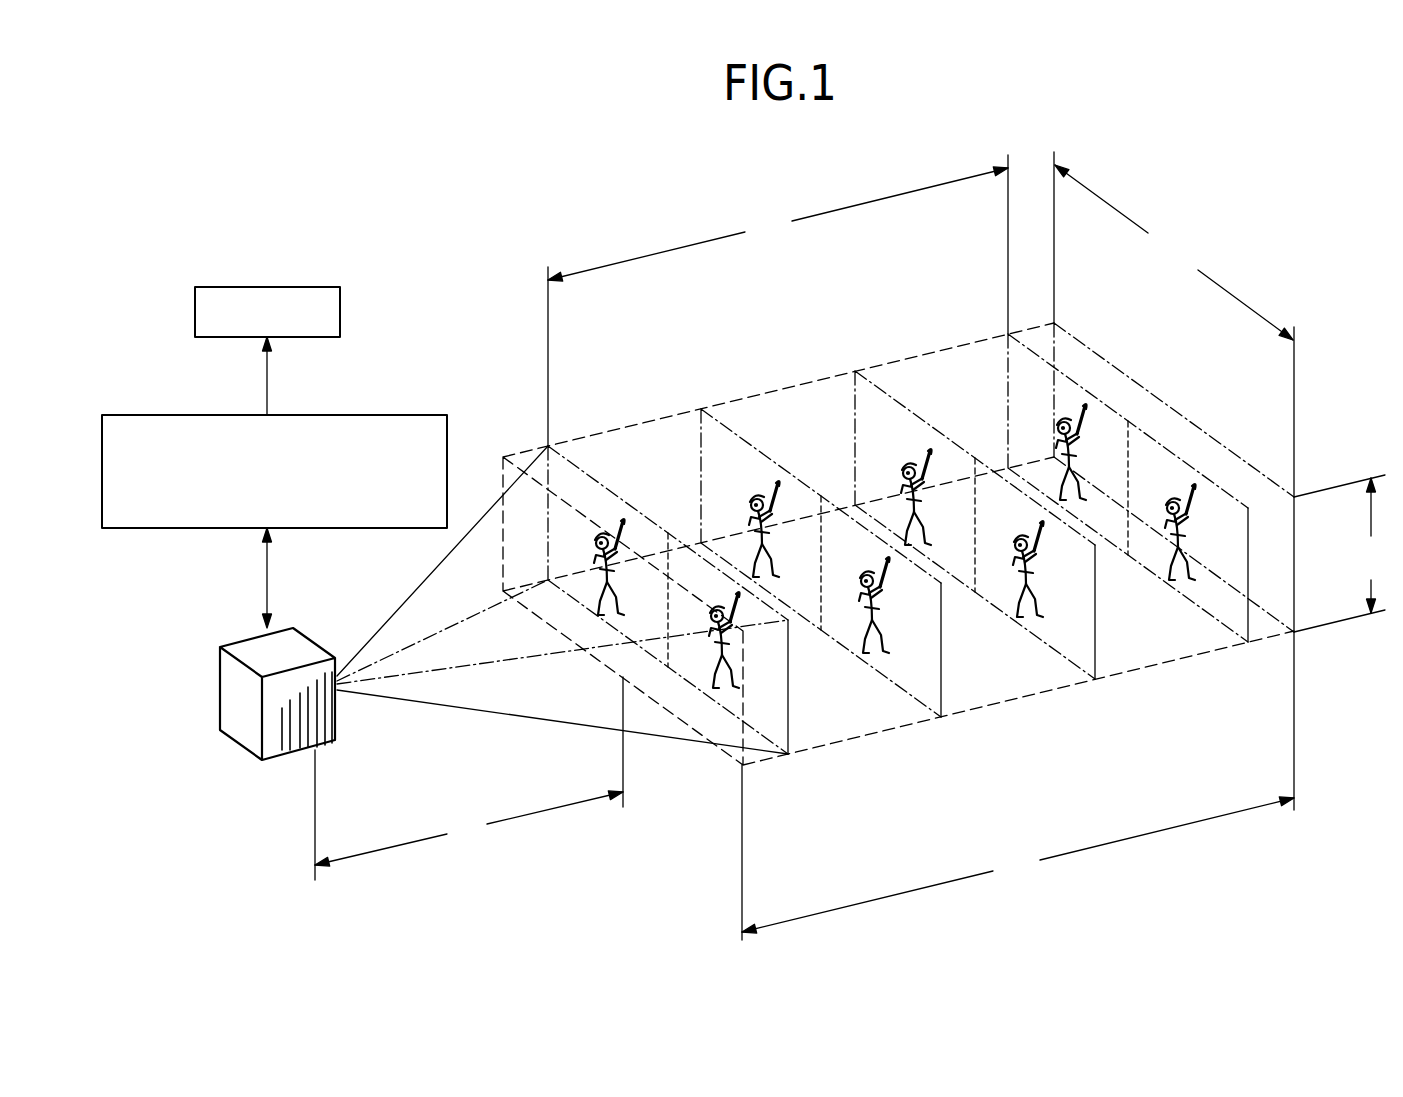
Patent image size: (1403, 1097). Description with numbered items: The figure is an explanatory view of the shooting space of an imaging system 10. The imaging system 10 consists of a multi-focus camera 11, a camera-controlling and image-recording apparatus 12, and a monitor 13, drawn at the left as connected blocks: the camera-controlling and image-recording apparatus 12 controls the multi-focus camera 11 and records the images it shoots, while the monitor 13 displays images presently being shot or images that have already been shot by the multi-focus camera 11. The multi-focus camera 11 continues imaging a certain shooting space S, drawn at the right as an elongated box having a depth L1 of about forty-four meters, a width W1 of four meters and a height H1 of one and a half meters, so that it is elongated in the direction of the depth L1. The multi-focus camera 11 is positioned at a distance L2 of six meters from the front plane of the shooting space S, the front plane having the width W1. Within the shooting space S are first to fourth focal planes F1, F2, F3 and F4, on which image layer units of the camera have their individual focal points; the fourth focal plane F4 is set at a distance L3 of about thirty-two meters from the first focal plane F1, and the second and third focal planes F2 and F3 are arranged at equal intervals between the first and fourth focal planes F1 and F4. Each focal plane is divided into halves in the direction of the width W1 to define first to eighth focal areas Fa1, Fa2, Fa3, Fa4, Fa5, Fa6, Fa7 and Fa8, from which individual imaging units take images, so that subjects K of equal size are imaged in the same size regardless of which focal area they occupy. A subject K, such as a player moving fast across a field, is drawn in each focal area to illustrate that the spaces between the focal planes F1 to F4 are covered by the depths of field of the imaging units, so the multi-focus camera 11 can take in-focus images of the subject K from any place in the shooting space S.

The imaging system 10 is at (377, 300).
The multi-focus camera 11 is at (291, 630).
The camera-controlling and image-recording apparatus 12 is at (372, 415).
The monitor 13 is at (268, 287).
The shooting space S is at (1272, 480).
The subject K is at (1064, 417).
The first focal plane F1 is at (587, 471).
The second focal plane F2 is at (910, 693).
The third focal plane F3 is at (1050, 646).
The fourth focal plane F4 is at (1008, 370).
The first focal area Fa1 is at (628, 503).
The second focal area Fa2 is at (788, 703).
The third focal area Fa3 is at (776, 461).
The fourth focal area Fa4 is at (942, 660).
The fifth focal area Fa5 is at (926, 421).
The sixth focal area Fa6 is at (1097, 636).
The seventh focal area Fa7 is at (1108, 407).
The eighth focal area Fa8 is at (1200, 473).
The depth L1 is at (1018, 852).
The distance L2 is at (469, 778).
The distance L3 is at (778, 224).
The width W1 is at (1173, 246).
The height H1 is at (1340, 553).